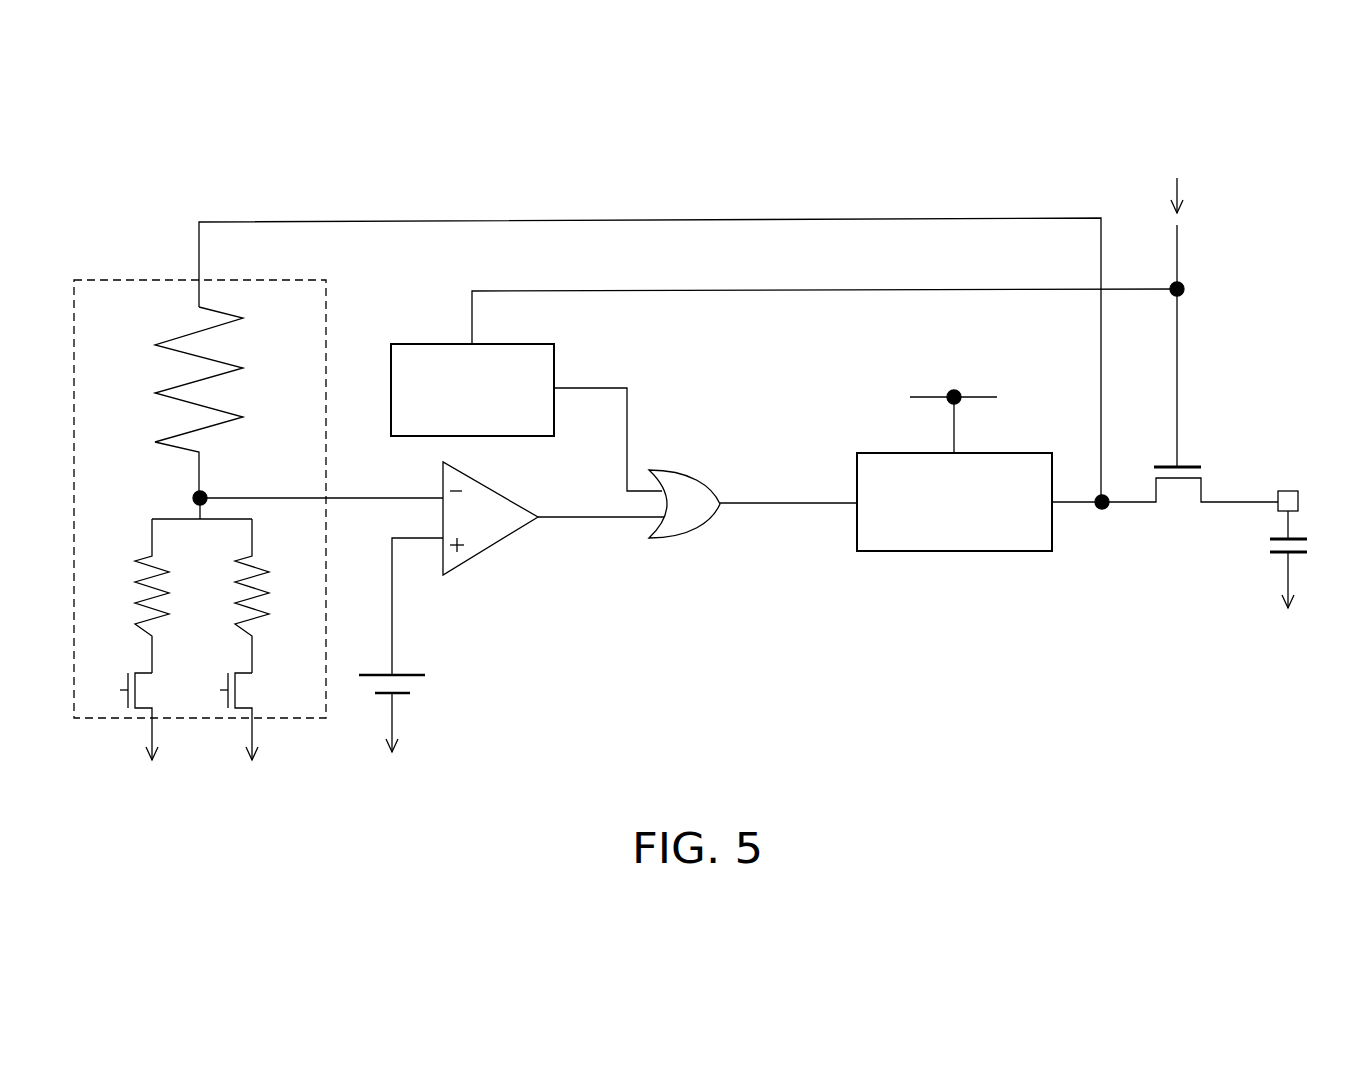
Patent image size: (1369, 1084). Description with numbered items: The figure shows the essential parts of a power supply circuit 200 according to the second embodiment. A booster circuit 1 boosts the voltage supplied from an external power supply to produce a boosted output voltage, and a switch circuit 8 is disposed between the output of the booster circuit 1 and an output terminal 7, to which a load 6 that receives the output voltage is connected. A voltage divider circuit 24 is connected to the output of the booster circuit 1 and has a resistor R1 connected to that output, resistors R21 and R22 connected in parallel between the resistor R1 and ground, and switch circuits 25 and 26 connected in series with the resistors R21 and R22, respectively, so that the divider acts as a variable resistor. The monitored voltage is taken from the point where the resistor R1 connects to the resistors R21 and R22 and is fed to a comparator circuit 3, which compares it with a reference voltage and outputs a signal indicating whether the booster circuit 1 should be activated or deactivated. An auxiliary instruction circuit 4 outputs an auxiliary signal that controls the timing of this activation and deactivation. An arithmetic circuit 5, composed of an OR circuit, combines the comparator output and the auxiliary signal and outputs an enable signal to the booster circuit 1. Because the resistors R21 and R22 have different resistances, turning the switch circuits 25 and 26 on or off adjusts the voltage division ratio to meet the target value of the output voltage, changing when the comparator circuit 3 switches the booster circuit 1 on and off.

The booster circuit 1 is at (957, 551).
The comparator circuit 3 is at (485, 551).
The auxiliary instruction circuit 4 is at (432, 344).
The arithmetic circuit 5 is at (678, 470).
The load 6 is at (1297, 536).
The output terminal 7 is at (1288, 490).
The switch circuit 8 is at (1203, 485).
The voltage divider circuit 24 is at (160, 280).
The switch circuit 25 is at (248, 675).
The switch circuit 26 is at (148, 674).
The power supply circuit 200 is at (776, 743).
The resistor R1 is at (223, 402).
The resistor R21 is at (279, 596).
The resistor R22 is at (179, 596).